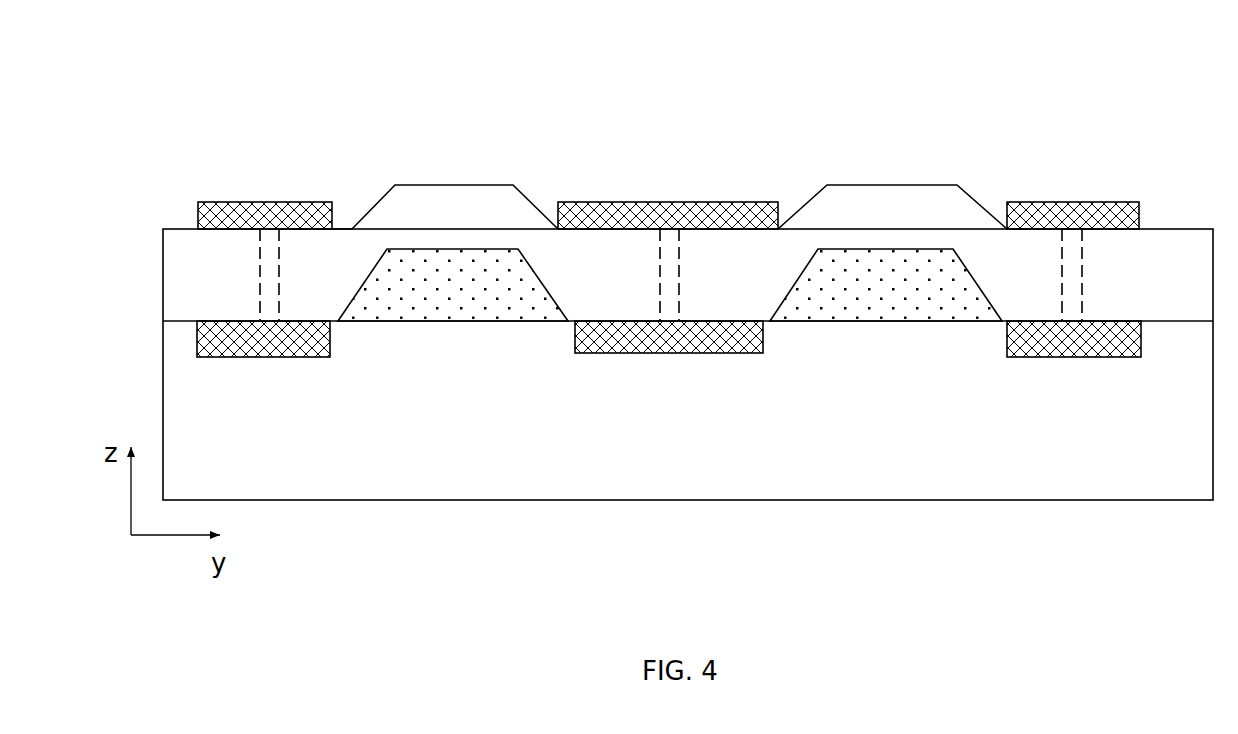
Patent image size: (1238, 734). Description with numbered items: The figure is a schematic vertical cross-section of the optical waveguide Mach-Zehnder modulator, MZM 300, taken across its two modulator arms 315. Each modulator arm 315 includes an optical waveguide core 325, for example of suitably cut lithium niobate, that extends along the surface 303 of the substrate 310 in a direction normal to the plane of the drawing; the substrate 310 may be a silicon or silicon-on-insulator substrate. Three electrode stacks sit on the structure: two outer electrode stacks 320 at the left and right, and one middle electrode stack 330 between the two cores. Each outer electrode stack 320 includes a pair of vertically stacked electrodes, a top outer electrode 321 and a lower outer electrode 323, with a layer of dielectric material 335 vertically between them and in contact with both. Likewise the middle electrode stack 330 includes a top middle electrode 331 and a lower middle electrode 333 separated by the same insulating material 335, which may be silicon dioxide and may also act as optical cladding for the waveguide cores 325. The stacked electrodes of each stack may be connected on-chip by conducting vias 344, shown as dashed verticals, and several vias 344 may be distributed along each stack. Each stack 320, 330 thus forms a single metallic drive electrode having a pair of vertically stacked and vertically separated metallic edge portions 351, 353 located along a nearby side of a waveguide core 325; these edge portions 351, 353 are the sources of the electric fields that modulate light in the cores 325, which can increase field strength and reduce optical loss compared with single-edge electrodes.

The MZM 300 is at (728, 25).
The surface of the substrate 303 is at (178, 316).
The substrate 310 is at (233, 491).
The modulator arms 315 is at (445, 157).
The outer electrode stacks 320 is at (247, 190).
The top outer electrode 321 is at (212, 202).
The lower outer electrode 323 is at (262, 357).
The optical waveguide core 325 is at (470, 317).
The middle electrode stack 330 is at (633, 175).
The top middle electrode 331 is at (680, 200).
The lower middle electrode 333 is at (633, 353).
The dielectric material 335 is at (238, 292).
The conducting vias 344 is at (260, 260).
The upper metallic edge portion 351 is at (333, 200).
The lower metallic edge portion 353 is at (340, 345).